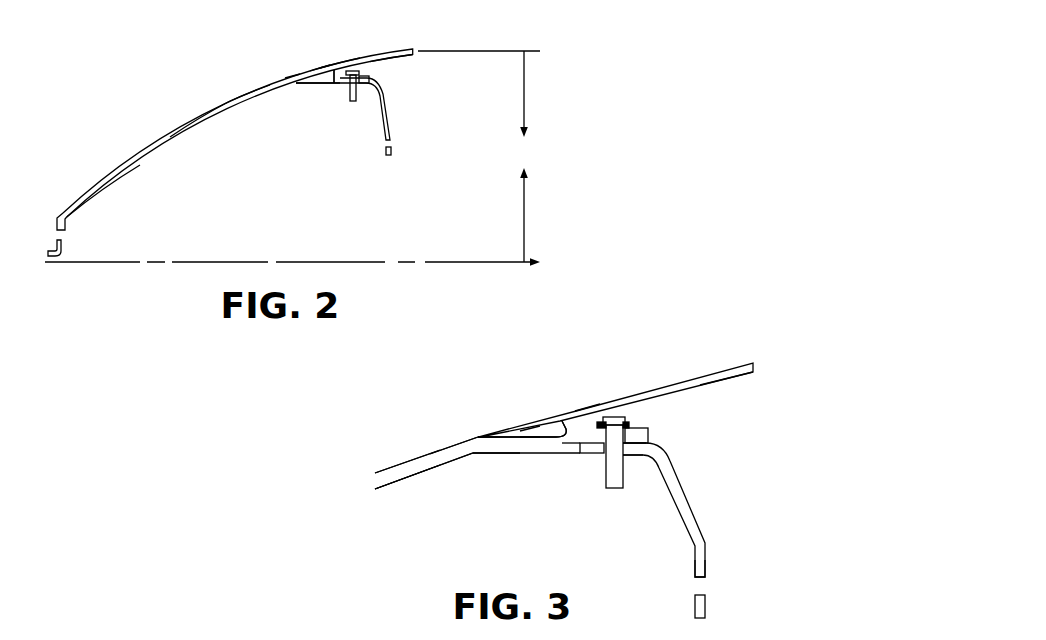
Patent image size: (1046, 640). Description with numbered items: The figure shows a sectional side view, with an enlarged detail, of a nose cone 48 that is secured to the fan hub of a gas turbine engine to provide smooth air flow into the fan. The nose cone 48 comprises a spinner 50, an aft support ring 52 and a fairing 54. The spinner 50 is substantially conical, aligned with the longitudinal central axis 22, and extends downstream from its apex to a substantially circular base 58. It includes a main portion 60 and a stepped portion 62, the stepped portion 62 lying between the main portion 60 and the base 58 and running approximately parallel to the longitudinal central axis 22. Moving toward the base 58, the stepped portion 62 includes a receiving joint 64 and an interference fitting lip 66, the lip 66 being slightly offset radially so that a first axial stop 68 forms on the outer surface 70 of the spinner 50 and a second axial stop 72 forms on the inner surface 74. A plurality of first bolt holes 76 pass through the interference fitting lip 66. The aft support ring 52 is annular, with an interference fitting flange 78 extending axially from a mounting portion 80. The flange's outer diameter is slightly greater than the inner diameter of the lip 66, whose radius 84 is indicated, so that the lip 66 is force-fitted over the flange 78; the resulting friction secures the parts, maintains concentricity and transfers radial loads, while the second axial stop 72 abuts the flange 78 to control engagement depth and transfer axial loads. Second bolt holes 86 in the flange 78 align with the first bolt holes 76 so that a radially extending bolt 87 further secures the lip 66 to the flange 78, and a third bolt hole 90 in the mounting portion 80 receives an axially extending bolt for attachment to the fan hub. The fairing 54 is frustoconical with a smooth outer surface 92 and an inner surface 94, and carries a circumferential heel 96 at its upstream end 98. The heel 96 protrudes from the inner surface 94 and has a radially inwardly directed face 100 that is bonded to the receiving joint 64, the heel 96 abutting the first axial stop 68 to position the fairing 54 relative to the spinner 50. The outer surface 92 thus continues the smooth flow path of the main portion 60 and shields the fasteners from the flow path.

In FIG. 2, the longitudinal central axis 22 is at (433, 262).
In FIG. 2, the nose cone 48 is at (152, 64).
In FIG. 3, the nose cone 48 is at (704, 292).
In FIG. 2, the spinner 50 is at (102, 178).
In FIG. 3, the spinner 50 is at (412, 476).
In FIG. 2, the aft support ring 52 is at (393, 127).
In FIG. 3, the aft support ring 52 is at (693, 513).
In FIG. 2, the fairing 54 is at (370, 55).
In FIG. 3, the fairing 54 is at (643, 393).
In FIG. 2, the base 58 is at (376, 79).
In FIG. 3, the base 58 is at (650, 434).
In FIG. 2, the main portion 60 is at (200, 117).
In FIG. 3, the main portion 60 is at (415, 458).
In FIG. 2, the stepped portion 62 is at (316, 99).
In FIG. 3, the stepped portion 62 is at (546, 470).
In FIG. 2, the receiving joint 64 is at (308, 85).
In FIG. 3, the receiving joint 64 is at (513, 447).
In FIG. 2, the interference fitting lip 66 is at (338, 83).
In FIG. 3, the interference fitting lip 66 is at (598, 441).
In FIG. 3, the first axial stop 68 is at (553, 425).
In FIG. 2, the outer surface 70 is at (248, 93).
In FIG. 3, the outer surface 70 is at (445, 450).
In FIG. 3, the second axial stop 72 is at (573, 465).
In FIG. 3, the inner surface 74 is at (488, 455).
In FIG. 3, the first bolt holes 76 is at (627, 428).
In FIG. 3, the interference fitting flange 78 is at (638, 451).
In FIG. 3, the mounting portion 80 is at (703, 567).
In FIG. 2, the radius 84 is at (479, 158).
In FIG. 3, the second bolt holes 86 is at (626, 458).
In FIG. 2, the radially extending bolt 87 is at (357, 101).
In FIG. 3, the radially extending bolt 87 is at (615, 478).
In FIG. 2, the third bolt hole 90 is at (382, 143).
In FIG. 3, the third bolt hole 90 is at (697, 588).
In FIG. 2, the smooth outer surface 92 is at (337, 62).
In FIG. 3, the smooth outer surface 92 is at (588, 403).
In FIG. 2, the inner surface 94 is at (401, 58).
In FIG. 3, the inner surface 94 is at (730, 377).
In FIG. 2, the circumferential heel 96 is at (321, 75).
In FIG. 3, the circumferential heel 96 is at (540, 430).
In FIG. 2, the upstream end 98 is at (292, 76).
In FIG. 3, the upstream end 98 is at (484, 436).
In FIG. 3, the face 100 is at (533, 440).